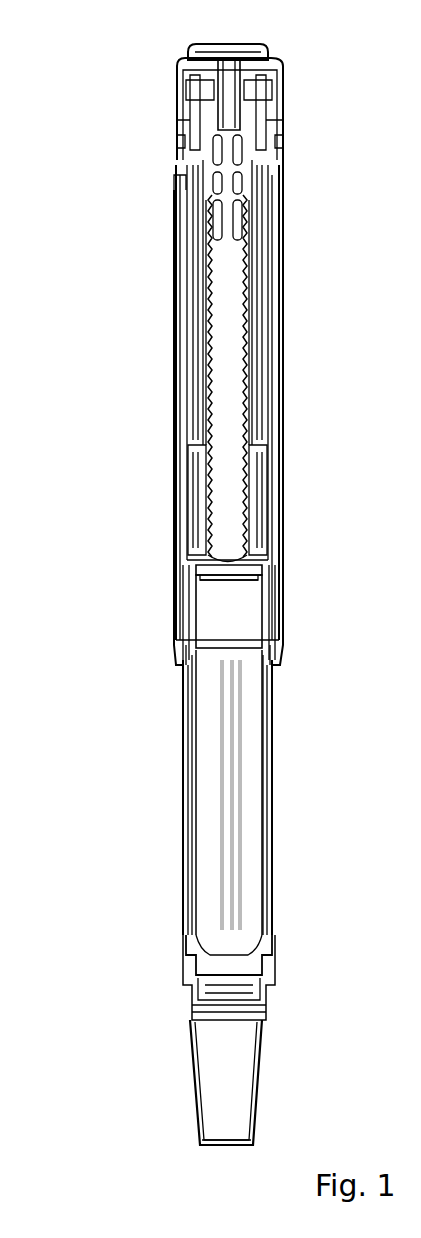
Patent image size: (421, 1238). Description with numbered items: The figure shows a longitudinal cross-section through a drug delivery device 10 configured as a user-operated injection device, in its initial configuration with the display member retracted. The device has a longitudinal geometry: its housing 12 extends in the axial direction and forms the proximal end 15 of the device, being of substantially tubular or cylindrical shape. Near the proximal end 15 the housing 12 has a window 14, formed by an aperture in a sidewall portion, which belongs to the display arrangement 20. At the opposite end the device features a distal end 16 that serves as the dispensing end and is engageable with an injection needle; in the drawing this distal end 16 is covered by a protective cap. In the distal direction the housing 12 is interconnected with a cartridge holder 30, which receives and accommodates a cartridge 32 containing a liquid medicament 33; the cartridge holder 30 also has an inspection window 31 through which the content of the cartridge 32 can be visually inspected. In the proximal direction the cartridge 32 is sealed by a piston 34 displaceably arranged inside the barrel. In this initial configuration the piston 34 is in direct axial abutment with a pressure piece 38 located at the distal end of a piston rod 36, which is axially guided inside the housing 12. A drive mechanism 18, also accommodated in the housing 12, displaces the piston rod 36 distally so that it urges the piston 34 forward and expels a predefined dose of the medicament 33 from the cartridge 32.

The drug delivery device 10 is at (115, 450).
The housing 12 is at (177, 362).
The window 14 is at (165, 168).
The proximal end 15 is at (165, 128).
The distal end 16 is at (148, 1027).
The drive mechanism 18 is at (150, 297).
The display arrangement 20 is at (155, 195).
The cartridge holder 30 is at (180, 590).
The inspection window 31 is at (178, 748).
The cartridge 32 is at (186, 890).
The medicament 33 is at (222, 845).
The piston 34 is at (209, 625).
The piston rod 36 is at (222, 412).
The pressure piece 38 is at (181, 565).